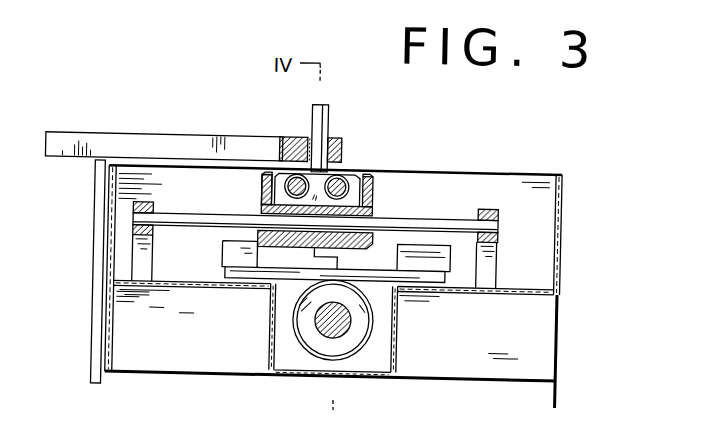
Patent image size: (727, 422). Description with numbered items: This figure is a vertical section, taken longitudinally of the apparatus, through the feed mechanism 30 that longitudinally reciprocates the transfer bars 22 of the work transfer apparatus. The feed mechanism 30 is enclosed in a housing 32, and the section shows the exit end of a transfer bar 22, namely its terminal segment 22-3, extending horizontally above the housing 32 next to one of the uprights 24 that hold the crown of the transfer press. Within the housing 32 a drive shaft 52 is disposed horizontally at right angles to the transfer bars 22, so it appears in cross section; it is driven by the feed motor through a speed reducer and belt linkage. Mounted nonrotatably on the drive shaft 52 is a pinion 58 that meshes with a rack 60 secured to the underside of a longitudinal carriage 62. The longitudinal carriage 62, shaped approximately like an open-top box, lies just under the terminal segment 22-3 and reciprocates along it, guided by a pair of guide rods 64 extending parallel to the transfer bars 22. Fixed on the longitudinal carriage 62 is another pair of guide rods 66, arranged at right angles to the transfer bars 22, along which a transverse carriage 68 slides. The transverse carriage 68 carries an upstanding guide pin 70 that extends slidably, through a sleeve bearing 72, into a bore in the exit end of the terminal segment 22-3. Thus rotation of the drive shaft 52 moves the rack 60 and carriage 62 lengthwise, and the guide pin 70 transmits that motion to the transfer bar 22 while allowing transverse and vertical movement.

The transfer bars 22 is at (97, 136).
The terminal segment 22-3 is at (178, 147).
The uprights 24 is at (98, 392).
The feed mechanism 30 is at (571, 174).
The housing 32 is at (560, 285).
The drive shaft 52 is at (319, 332).
The pinions 58 is at (375, 329).
The racks 60 is at (420, 290).
The longitudinal carriages 62 is at (371, 189).
The guide rods 64 is at (444, 218).
The guide rods 66 is at (260, 188).
The transverse carriage 68 is at (343, 170).
The guide pin 70 is at (326, 120).
The sleeve bearings 72 is at (303, 141).